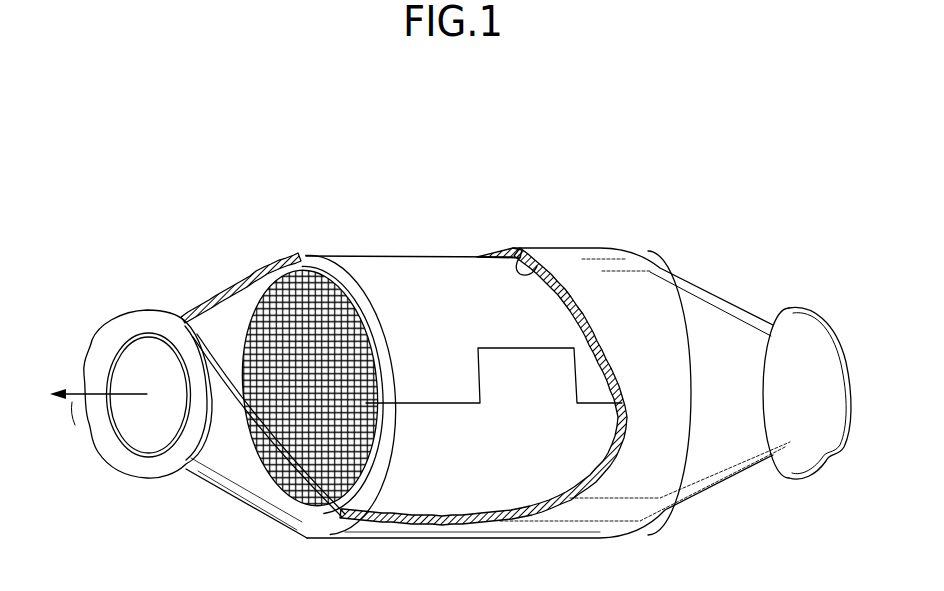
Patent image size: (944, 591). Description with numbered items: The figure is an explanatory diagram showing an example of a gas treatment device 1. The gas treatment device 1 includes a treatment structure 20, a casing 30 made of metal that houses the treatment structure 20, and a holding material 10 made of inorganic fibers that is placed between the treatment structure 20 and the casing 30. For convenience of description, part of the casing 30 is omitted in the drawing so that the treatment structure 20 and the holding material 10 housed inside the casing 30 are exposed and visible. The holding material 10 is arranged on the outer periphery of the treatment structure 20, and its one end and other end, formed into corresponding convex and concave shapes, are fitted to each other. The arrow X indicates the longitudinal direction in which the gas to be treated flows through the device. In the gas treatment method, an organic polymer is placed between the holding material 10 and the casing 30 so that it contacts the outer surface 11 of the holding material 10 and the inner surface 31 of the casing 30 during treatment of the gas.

The gas treatment device 1 is at (481, 172).
The holding material 10 is at (337, 272).
The outer surface of the holding material 11 is at (420, 265).
The treatment structure 20 is at (308, 270).
The casing 30 is at (607, 263).
The inner surface of the casing 31 is at (515, 258).